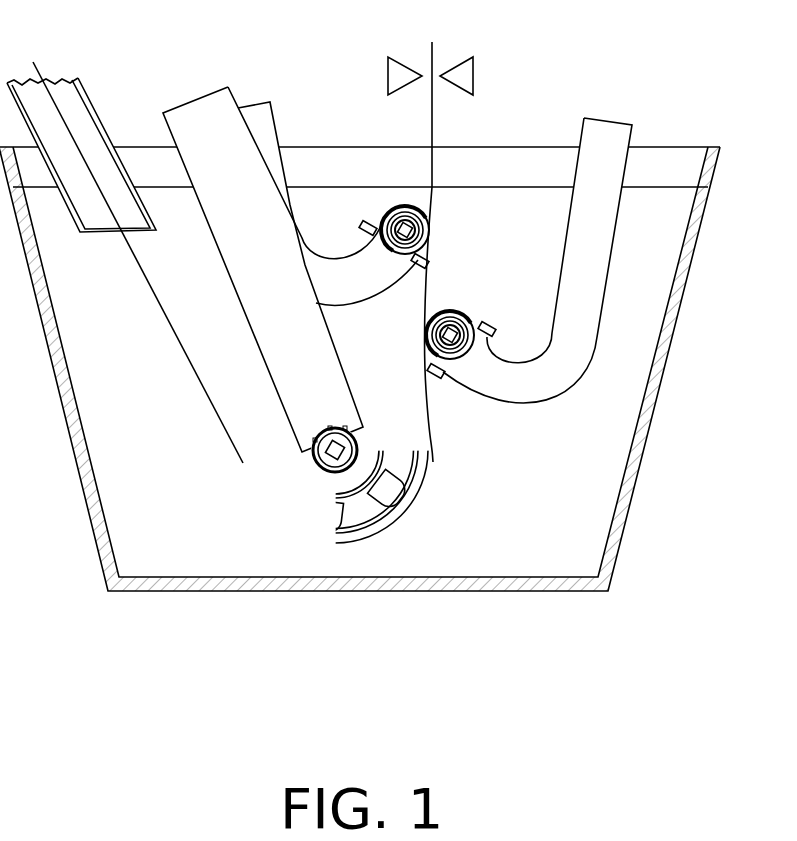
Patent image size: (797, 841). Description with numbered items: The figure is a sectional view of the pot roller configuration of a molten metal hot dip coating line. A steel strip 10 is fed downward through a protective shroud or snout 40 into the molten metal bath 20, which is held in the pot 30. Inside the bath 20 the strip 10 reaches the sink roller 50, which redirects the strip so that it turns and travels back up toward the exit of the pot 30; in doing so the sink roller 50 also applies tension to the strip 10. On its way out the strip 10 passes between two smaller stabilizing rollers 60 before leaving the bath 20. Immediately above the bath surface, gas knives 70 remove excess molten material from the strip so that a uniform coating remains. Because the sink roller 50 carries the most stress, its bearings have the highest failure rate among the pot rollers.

The steel strip 10 is at (141, 275).
The molten metal bath 20 is at (141, 499).
The pot 30 is at (694, 253).
The snout 40 is at (90, 99).
The sink roller 50 is at (419, 483).
The stabilizing rollers 60 is at (428, 242).
The gas knives 70 is at (388, 76).